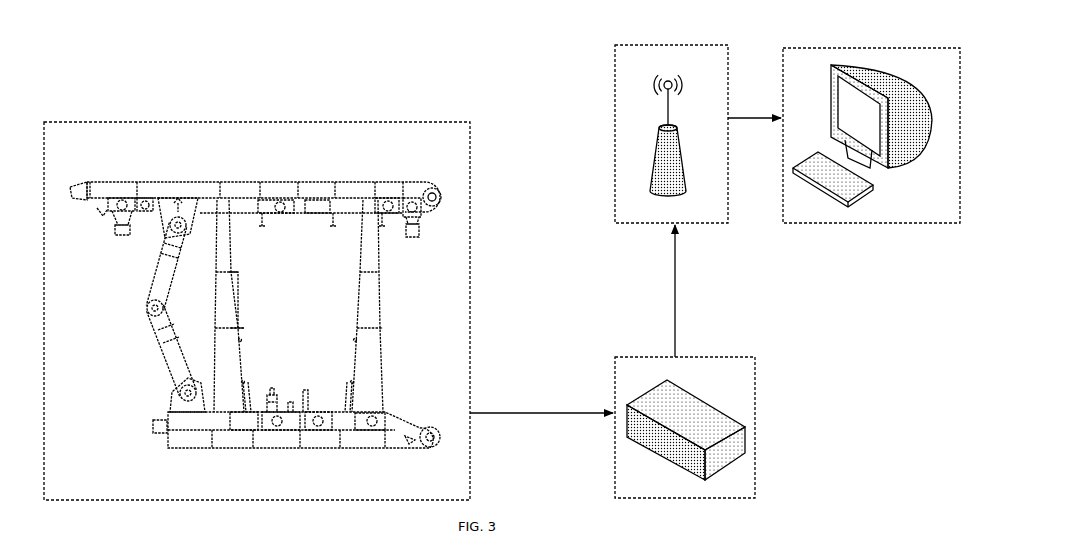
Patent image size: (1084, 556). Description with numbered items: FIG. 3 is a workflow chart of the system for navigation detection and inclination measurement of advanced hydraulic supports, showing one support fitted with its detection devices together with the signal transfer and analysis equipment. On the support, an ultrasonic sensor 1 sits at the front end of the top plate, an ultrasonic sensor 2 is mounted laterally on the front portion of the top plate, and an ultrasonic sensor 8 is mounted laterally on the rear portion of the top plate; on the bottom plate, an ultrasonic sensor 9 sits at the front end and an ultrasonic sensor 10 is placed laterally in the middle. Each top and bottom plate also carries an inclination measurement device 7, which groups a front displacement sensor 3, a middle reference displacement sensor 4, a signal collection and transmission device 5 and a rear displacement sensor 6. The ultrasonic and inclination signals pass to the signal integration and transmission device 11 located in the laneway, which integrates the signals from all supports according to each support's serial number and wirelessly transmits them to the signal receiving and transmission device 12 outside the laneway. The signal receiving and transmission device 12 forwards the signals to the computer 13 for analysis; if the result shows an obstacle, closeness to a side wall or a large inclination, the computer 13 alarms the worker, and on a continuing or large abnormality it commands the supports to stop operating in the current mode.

The ultrasonic sensor at a front end of a top plate 1 is at (75, 193).
The ultrasonic sensor laterally on a front portion of the top plate 2 is at (122, 200).
The front displacement sensor 3 is at (150, 200).
The middle reference displacement sensor 4 is at (275, 200).
The signal collection and transmission device 5 is at (313, 200).
The rear displacement sensor 6 is at (387, 207).
The inclination measurement device 7 is at (253, 157).
The ultrasonic sensor laterally on a rear portion of the top plate 8 is at (413, 198).
The ultrasonic sensor at a front end of a bottom plate 9 is at (153, 425).
The ultrasonic sensor laterally in the middle of the bottom plate 10 is at (275, 408).
The signal integration and transmission device 11 is at (615, 357).
The signal receiving and transmission device 12 is at (615, 45).
The computer for analysis 13 is at (795, 45).